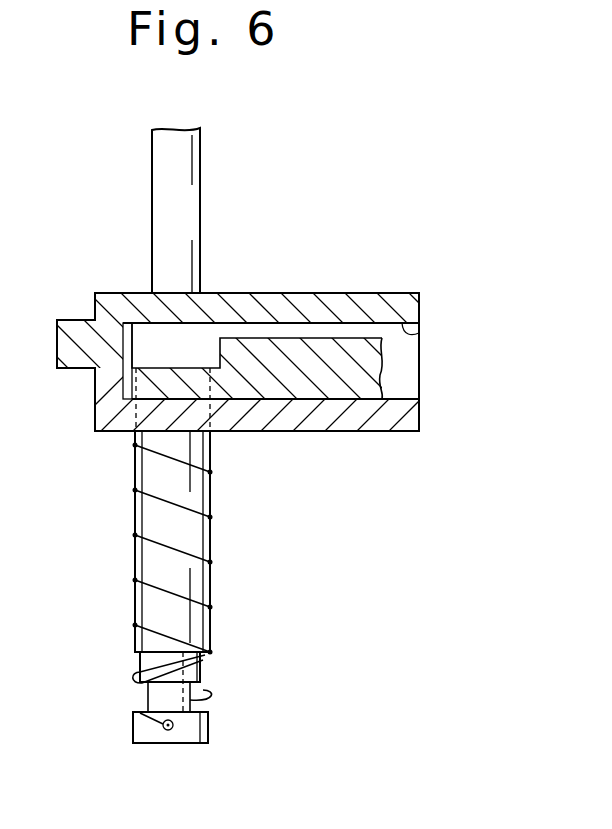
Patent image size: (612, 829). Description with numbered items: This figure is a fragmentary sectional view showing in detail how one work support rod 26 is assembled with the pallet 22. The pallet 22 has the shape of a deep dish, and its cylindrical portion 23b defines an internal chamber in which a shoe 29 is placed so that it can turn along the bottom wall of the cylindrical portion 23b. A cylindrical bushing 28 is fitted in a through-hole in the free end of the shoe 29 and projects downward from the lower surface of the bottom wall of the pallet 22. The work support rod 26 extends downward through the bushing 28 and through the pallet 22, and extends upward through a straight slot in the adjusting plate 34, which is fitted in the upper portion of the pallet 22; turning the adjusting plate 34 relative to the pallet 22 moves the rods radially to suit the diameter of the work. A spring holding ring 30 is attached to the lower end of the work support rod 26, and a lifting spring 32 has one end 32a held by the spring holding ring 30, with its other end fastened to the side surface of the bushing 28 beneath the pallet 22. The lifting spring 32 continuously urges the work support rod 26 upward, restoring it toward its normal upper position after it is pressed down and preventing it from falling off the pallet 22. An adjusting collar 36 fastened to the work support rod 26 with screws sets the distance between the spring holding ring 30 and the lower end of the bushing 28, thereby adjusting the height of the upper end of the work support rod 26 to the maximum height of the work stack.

The pallet 22 is at (348, 426).
The cylindrical portion 23b is at (420, 336).
The work support rod 26 is at (190, 222).
The cylindrical bushing 28 is at (200, 630).
The shoe 29 is at (375, 372).
The spring holding ring 30 is at (210, 728).
The lifting spring 32 is at (200, 505).
The spring end 32a is at (168, 732).
The adjusting plate 34 is at (352, 307).
The adjusting collar 36 is at (197, 668).